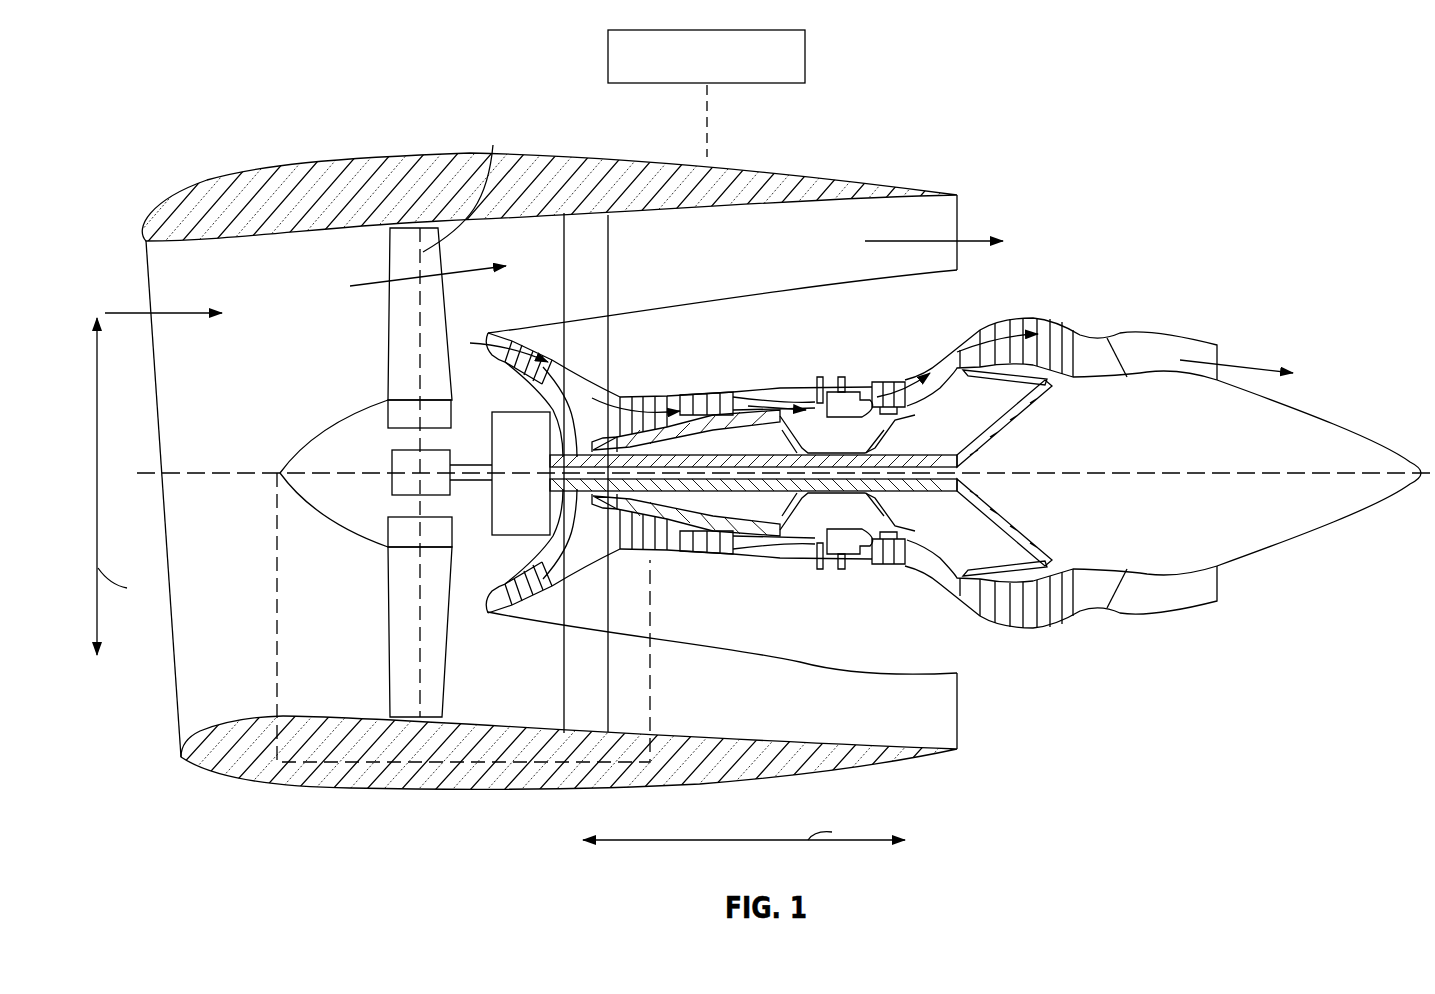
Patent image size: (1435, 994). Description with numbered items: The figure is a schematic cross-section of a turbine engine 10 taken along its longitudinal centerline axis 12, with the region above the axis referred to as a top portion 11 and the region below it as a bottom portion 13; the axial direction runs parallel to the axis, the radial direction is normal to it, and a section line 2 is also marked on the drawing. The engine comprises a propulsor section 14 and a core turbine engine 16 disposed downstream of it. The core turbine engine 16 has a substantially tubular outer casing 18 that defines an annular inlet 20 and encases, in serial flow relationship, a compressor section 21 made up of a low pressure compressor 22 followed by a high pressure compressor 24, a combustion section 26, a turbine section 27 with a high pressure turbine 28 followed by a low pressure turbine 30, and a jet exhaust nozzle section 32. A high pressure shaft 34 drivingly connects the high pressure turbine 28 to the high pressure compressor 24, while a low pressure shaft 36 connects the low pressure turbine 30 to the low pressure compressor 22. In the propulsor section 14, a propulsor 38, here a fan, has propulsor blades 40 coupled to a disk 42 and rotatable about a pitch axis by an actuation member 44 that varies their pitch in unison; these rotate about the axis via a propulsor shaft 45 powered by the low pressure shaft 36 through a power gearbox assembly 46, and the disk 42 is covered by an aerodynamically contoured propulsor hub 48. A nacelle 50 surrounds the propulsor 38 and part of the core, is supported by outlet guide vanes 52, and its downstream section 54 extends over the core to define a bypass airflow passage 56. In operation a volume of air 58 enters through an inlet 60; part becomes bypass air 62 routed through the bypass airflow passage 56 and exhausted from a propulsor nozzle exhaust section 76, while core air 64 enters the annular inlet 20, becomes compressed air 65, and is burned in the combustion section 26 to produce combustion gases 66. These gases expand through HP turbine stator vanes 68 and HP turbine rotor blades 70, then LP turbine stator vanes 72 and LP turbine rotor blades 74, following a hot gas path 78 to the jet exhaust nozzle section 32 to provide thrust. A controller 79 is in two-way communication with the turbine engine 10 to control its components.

The section line 2 is at (318, 765).
The turbine engine 10 is at (749, 443).
The top portion 11 is at (912, 345).
The longitudinal centerline axis 12 is at (1214, 471).
The bottom portion 13 is at (938, 572).
The propulsor section 14 is at (356, 248).
The core turbine engine 16 is at (838, 304).
The outer casing 18 is at (793, 662).
The annular inlet 20 is at (537, 598).
The compressor section 21 is at (732, 377).
The low pressure compressor 22 is at (545, 590).
The high pressure compressor 24 is at (641, 540).
The combustion section 26 is at (842, 550).
The turbine section 27 is at (1096, 375).
The high pressure turbine 28 is at (1061, 596).
The low pressure turbine 30 is at (1061, 596).
The jet exhaust nozzle section 32 is at (1128, 605).
The high pressure shaft 34 is at (817, 378).
The low pressure shaft 36 is at (903, 450).
The propulsor 38 is at (383, 472).
The propulsor blades 40 is at (385, 622).
The disk 42 is at (403, 418).
The actuation member 44 is at (392, 481).
The propulsor shaft 45 is at (413, 400).
The power gearbox assembly 46 is at (507, 418).
The propulsor hub 48 is at (313, 505).
The nacelle 50 is at (575, 482).
The outlet guide vanes 52 is at (610, 283).
The downstream section 54 is at (855, 182).
The bypass airflow passage 56 is at (729, 261).
The volume of air 58 is at (192, 313).
The inlet 60 is at (173, 680).
The bypass air 62 is at (363, 290).
The core air 64 is at (490, 342).
The compressed air 65 is at (668, 397).
The combustion gases 66 is at (888, 383).
The HP turbine stator vanes 68 is at (912, 566).
The HP turbine rotor blades 70 is at (893, 553).
The LP turbine stator vanes 72 is at (1061, 572).
The LP turbine rotor blades 74 is at (977, 605).
The propulsor nozzle exhaust section 76 is at (960, 226).
The hot gas path 78 is at (940, 368).
The controller 79 is at (808, 58).